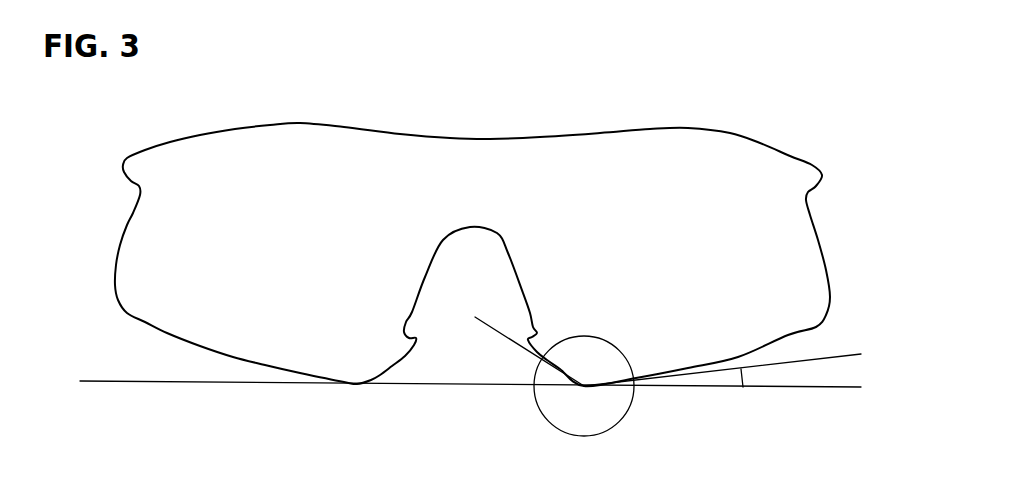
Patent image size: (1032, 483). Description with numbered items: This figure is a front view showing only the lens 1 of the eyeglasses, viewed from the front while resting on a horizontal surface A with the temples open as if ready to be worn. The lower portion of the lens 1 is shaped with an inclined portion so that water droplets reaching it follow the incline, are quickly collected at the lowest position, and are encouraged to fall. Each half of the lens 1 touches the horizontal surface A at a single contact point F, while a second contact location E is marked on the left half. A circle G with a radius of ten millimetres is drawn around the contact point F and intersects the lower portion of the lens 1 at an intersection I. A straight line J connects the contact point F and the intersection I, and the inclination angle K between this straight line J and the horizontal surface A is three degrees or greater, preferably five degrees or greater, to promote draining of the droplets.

The lens 1 is at (307, 190).
The horizontal surface A is at (252, 404).
The left contact point of lens lower edge with reference line E is at (357, 386).
The contact point F is at (585, 388).
The circle G is at (591, 313).
The intersection I is at (637, 383).
The straight line J is at (851, 328).
The inclination angle K is at (741, 369).